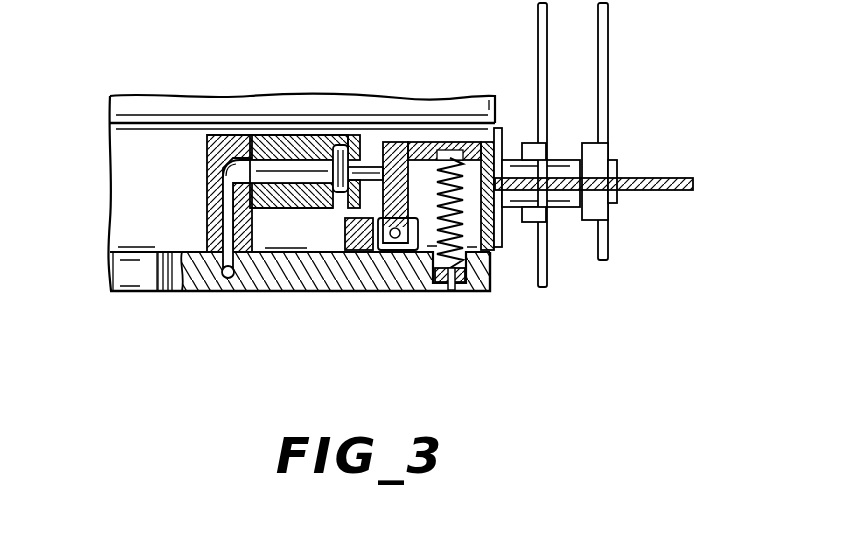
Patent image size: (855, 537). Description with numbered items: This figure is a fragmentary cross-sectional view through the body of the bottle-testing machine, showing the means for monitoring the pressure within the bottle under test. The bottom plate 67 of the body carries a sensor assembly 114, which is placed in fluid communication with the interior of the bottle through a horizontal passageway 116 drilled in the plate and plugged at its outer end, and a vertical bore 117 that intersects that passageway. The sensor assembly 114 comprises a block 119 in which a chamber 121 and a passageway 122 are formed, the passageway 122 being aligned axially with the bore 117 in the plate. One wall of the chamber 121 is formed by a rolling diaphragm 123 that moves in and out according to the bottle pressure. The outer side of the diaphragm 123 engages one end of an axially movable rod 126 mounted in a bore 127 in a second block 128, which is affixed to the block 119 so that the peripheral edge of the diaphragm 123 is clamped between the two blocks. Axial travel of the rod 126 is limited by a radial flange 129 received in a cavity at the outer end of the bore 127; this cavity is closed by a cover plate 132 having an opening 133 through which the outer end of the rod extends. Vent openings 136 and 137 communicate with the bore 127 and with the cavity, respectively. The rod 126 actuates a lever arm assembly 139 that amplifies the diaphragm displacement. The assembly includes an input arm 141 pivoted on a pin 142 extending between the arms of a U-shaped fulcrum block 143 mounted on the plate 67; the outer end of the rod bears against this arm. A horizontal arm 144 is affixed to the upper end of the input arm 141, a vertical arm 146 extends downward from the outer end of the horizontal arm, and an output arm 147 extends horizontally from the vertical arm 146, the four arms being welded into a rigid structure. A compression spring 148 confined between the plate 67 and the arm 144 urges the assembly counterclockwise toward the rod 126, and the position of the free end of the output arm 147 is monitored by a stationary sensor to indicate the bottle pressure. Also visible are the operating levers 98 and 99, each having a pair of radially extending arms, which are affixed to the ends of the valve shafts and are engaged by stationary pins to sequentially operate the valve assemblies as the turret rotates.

The sensor assembly 114 is at (186, 136).
The horizontal passageway 116 is at (223, 279).
The vertical bore 117 is at (193, 291).
The block 119 is at (205, 170).
The chamber 121 is at (230, 175).
The passageway 122 is at (113, 292).
The rolling diaphragm 123 is at (235, 137).
The axially movable rod 126 is at (272, 155).
The bore 127 is at (300, 248).
The block 128 is at (298, 148).
The radial flange 129 is at (310, 162).
The cover plate 132 is at (355, 143).
The opening 133 is at (368, 140).
The vent opening 136 is at (300, 210).
The vent opening 137 is at (336, 210).
The lever arm assembly 139 is at (509, 241).
The input arm 141 is at (393, 141).
The pin 142 is at (358, 251).
The U-shaped fulcrum block 143 is at (395, 251).
The horizontal arm 144 is at (432, 141).
The vertical arm 146 is at (503, 130).
The output arm 147 is at (635, 177).
The compression spring 148 is at (482, 270).
The bottom plate 67 is at (442, 272).
The operating lever 98 is at (613, 216).
The operating lever 99 is at (549, 217).